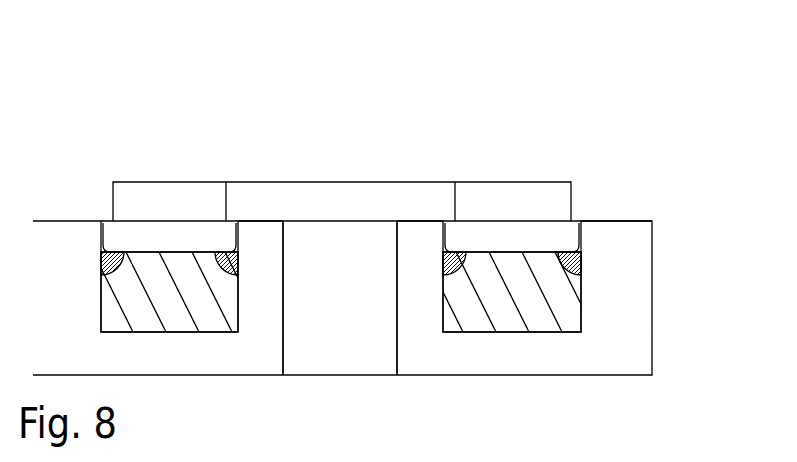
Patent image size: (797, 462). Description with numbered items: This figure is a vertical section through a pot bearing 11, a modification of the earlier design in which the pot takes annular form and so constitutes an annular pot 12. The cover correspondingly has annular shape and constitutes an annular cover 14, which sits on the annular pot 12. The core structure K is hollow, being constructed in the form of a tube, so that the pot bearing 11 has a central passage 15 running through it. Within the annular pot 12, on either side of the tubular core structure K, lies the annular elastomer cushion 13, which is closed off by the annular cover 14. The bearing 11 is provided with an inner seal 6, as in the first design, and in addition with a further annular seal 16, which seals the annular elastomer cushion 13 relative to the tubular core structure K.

The pot bearing 11 is at (551, 97).
The annular pot 12 is at (619, 282).
The elastomer cushion 13 is at (562, 291).
The annular cover 14 is at (550, 205).
The passage 15 is at (353, 282).
The annular seal 16 is at (453, 260).
The inner seal 6 is at (573, 258).
The core structure K is at (222, 134).